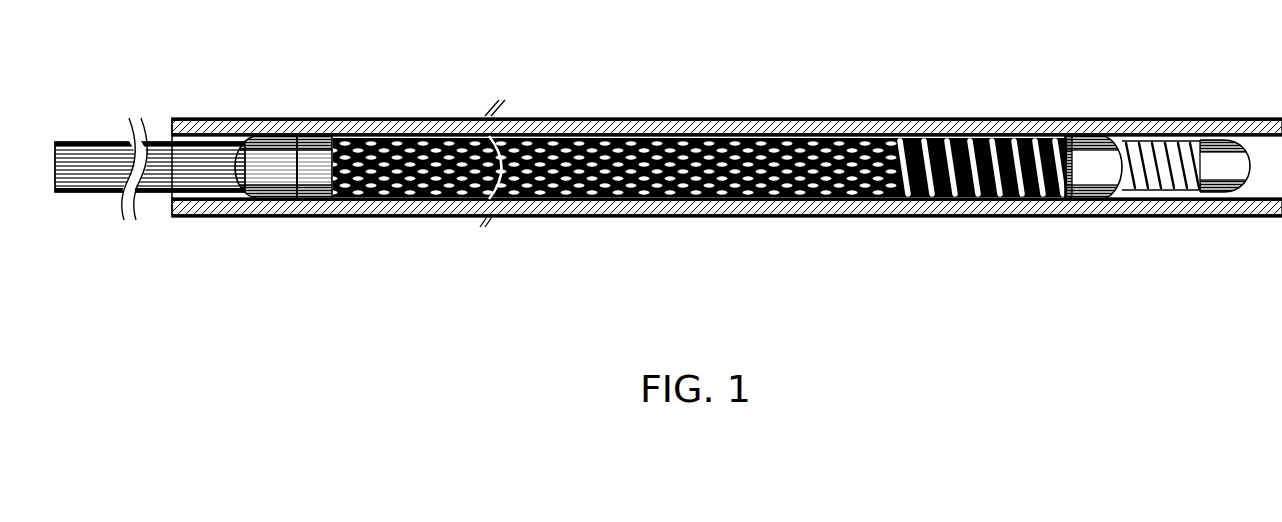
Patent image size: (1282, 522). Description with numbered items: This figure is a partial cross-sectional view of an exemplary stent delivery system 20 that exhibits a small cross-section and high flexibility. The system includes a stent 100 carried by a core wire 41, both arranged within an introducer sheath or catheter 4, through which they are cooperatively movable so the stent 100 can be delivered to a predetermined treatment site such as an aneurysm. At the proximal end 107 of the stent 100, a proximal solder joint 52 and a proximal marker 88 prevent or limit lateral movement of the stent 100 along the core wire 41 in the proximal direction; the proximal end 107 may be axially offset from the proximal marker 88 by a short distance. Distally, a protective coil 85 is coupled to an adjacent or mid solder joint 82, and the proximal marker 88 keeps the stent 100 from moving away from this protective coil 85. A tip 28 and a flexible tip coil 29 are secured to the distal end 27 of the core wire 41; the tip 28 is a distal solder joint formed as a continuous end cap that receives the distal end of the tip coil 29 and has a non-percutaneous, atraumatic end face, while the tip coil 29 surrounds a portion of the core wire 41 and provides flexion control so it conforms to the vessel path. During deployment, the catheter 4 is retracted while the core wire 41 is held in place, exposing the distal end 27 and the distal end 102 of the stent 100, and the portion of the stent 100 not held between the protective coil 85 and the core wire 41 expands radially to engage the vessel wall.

The catheter 4 is at (633, 124).
The stent delivery system 20 is at (736, 217).
The core wire 41 is at (92, 174).
The proximal solder joint 52 is at (282, 136).
The proximal marker 88 is at (316, 186).
The stent 100 is at (560, 187).
The proximal end of the stent 107 is at (391, 141).
The protective coil 85 is at (998, 189).
The distal end of the stent 102 is at (982, 137).
The mid solder joint 82 is at (1090, 136).
The tip coil 29 is at (1165, 186).
The tip 28 is at (1218, 139).
The distal end of the core wire 27 is at (1245, 180).